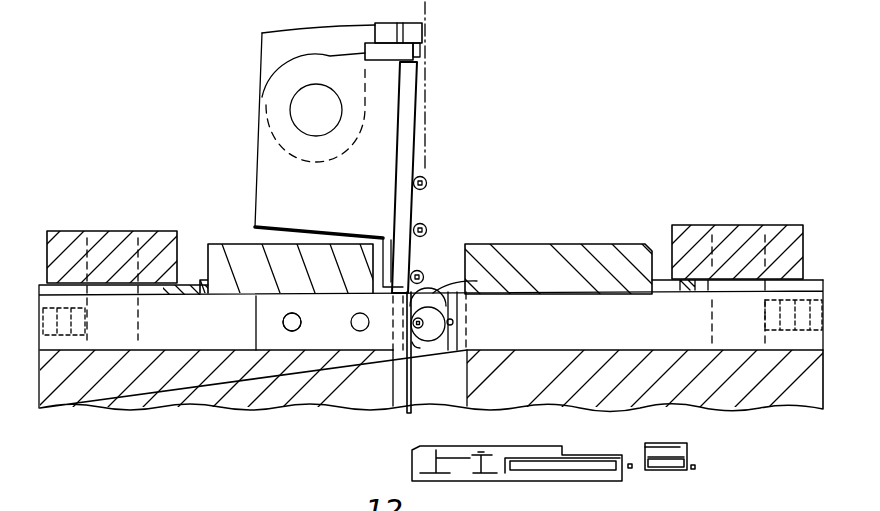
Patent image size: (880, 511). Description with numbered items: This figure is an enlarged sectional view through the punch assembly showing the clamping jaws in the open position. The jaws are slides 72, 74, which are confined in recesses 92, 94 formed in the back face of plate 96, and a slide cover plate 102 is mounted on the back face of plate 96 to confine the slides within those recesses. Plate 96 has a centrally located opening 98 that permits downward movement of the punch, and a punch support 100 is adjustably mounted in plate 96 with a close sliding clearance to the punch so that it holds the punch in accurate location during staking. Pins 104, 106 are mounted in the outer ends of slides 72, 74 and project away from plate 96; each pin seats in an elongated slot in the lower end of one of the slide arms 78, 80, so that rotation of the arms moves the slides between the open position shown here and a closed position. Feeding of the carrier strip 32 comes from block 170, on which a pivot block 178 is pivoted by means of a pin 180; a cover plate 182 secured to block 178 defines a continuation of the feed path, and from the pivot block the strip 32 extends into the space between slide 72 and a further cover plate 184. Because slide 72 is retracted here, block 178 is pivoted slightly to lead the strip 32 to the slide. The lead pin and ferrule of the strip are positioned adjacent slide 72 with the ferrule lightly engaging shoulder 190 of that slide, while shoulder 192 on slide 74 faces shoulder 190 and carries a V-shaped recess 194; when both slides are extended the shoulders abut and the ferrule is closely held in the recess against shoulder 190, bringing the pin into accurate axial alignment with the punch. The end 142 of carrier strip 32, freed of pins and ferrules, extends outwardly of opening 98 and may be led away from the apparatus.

The block 170 is at (262, 33).
The pin 180 is at (298, 103).
The pivot block 178 is at (267, 155).
The slide arm 80 is at (163, 238).
The pin 104 is at (150, 313).
The carrier strip 32 is at (422, 53).
The cover plate 182 is at (413, 88).
The punch support 100 is at (433, 293).
The shoulder 190 is at (415, 350).
The V-shaped recess 194 is at (453, 323).
The end of carrier strip 142 is at (407, 413).
The opening 98 is at (458, 393).
The slide cover plate 102 is at (582, 250).
The shoulder 192 is at (512, 265).
The slide arm 78 is at (773, 238).
The pin 106 is at (712, 318).
The plate 96 is at (135, 392).
The recess 92 is at (533, 346).
The slide 74 is at (630, 340).
The recess 94 is at (205, 350).
The slide 72 is at (250, 347).
The cover plate 184 is at (318, 342).